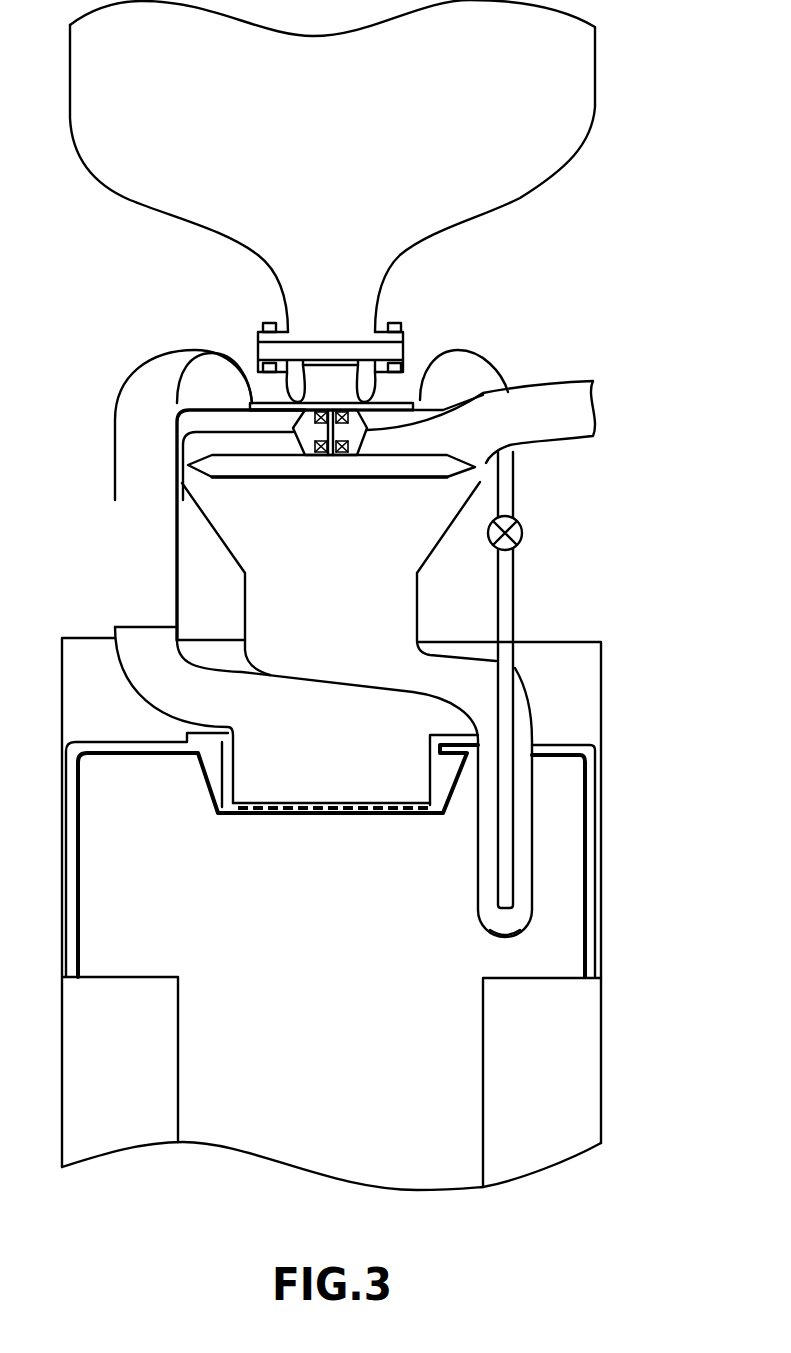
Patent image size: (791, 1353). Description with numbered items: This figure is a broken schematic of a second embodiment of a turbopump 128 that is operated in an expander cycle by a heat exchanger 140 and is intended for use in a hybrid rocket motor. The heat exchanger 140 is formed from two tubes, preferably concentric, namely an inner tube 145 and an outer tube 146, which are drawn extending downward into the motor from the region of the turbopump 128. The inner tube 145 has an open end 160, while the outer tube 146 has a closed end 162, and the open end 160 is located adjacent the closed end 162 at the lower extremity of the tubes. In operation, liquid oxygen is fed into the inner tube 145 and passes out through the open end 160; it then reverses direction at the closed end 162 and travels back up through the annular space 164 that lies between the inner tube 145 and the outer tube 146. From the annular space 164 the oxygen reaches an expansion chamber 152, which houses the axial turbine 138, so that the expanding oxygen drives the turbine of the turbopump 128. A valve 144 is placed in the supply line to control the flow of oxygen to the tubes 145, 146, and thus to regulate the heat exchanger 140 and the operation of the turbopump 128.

The turbopump 128 is at (386, 397).
The axial turbine 138 is at (472, 471).
The valve 144 is at (518, 547).
The expansion chamber 152 is at (397, 630).
The inner tube 145 is at (513, 723).
The outer tube 146 is at (532, 797).
The heat exchanger 140 is at (540, 845).
The annular space 164 is at (520, 890).
The open end 160 is at (510, 908).
The closed end 162 is at (510, 937).